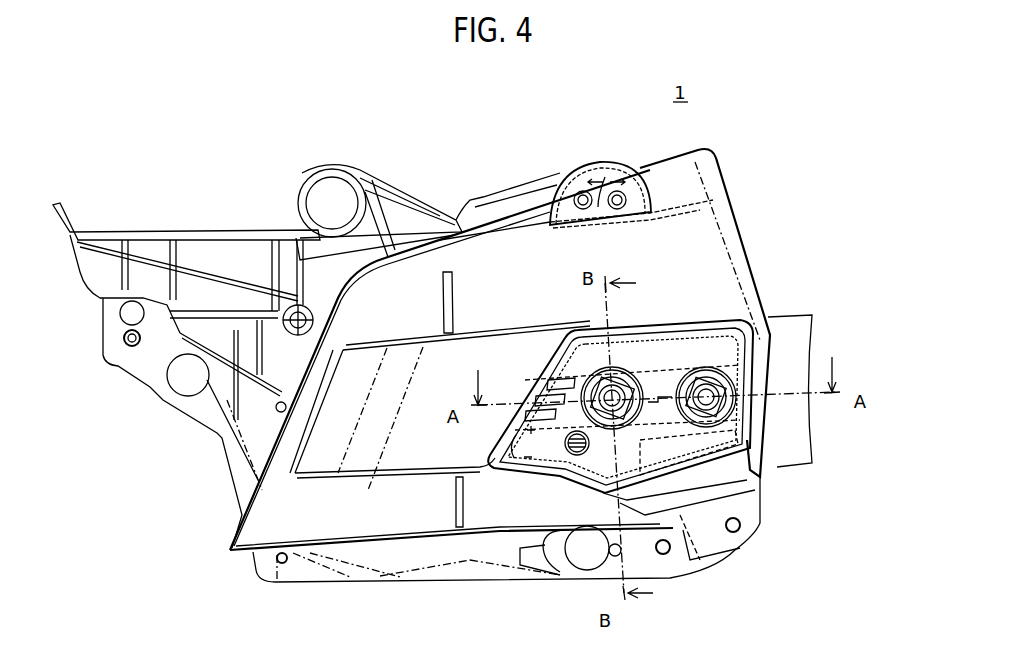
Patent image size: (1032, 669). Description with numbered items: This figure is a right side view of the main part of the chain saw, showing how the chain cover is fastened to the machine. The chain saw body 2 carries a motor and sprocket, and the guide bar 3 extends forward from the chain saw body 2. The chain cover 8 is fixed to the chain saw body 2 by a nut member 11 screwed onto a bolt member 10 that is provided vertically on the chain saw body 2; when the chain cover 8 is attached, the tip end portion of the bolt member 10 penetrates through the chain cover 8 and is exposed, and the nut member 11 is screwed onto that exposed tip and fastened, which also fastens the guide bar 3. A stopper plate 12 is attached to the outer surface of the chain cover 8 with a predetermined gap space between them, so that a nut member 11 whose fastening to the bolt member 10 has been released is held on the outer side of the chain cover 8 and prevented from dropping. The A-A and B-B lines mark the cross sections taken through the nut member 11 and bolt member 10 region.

The chain saw body 2 is at (388, 203).
The guide bar 3 is at (798, 330).
The chain cover 8 is at (703, 246).
The bolt member 10 is at (712, 403).
The nut member 11 is at (598, 380).
The stopper plate 12 is at (667, 450).